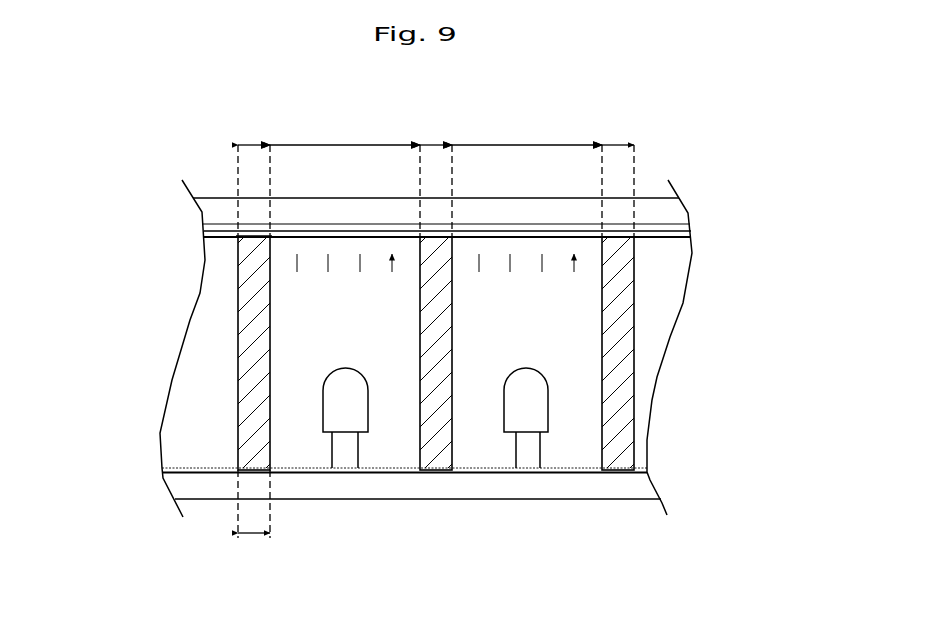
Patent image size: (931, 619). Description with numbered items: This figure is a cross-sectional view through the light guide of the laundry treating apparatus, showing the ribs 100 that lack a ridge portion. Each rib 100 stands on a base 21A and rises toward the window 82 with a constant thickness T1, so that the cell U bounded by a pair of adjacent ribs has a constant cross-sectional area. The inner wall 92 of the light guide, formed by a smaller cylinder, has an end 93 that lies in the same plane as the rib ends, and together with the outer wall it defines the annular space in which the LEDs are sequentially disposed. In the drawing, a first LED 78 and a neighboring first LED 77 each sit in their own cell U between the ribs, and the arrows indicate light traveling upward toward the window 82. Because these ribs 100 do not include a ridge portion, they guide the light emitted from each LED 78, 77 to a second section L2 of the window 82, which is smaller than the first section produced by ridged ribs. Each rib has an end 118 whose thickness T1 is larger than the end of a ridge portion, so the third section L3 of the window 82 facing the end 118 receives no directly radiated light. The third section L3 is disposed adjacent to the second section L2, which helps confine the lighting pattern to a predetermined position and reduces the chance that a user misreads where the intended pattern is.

The end of rib 118 is at (252, 237).
The end of inner wall 93 is at (340, 237).
The window 82 is at (392, 214).
The rib 100 is at (247, 306).
The inner wall 92 is at (203, 393).
The cell U is at (300, 392).
The first LED 78 is at (350, 412).
The first LED 77 is at (532, 403).
The substrate 21A is at (495, 493).
The second section L2 is at (436, 134).
The third section L3 is at (436, 180).
The thickness T1 is at (254, 515).